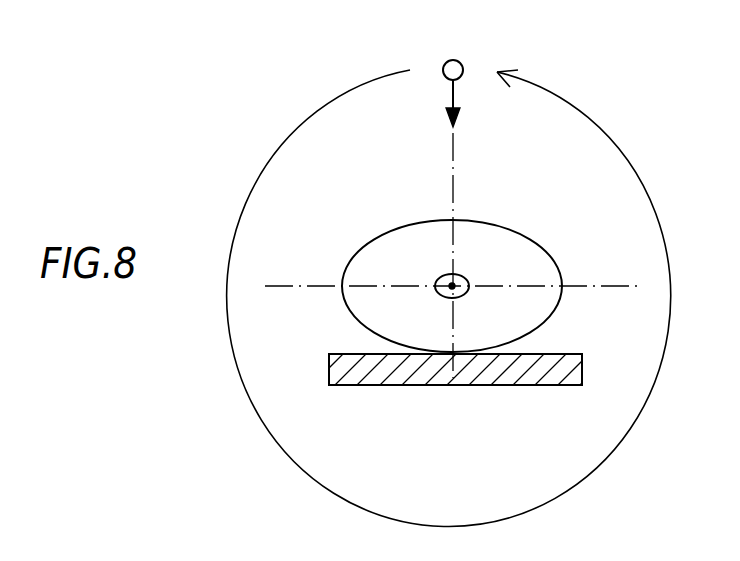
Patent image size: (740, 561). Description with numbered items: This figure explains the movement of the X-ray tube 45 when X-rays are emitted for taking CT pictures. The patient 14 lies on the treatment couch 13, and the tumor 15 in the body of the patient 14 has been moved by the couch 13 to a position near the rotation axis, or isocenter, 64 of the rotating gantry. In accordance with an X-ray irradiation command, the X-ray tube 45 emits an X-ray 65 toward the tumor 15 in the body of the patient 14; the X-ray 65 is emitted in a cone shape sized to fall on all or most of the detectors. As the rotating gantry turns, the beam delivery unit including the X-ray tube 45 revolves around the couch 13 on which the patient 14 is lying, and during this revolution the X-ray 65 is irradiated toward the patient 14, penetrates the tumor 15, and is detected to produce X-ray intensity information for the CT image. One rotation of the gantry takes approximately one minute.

The treatment couch 13 is at (398, 387).
The patient 14 is at (372, 240).
The tumor 15 is at (464, 276).
The X-ray tube 45 is at (462, 60).
The rotation axis (isocenter) 64 is at (455, 290).
The X-ray 65 is at (447, 93).